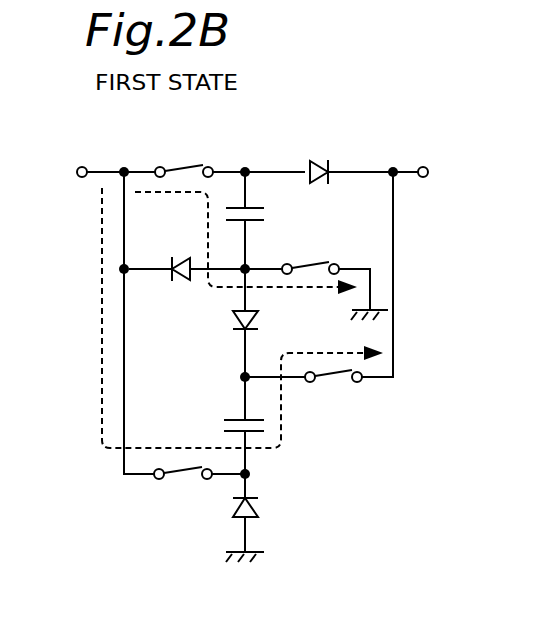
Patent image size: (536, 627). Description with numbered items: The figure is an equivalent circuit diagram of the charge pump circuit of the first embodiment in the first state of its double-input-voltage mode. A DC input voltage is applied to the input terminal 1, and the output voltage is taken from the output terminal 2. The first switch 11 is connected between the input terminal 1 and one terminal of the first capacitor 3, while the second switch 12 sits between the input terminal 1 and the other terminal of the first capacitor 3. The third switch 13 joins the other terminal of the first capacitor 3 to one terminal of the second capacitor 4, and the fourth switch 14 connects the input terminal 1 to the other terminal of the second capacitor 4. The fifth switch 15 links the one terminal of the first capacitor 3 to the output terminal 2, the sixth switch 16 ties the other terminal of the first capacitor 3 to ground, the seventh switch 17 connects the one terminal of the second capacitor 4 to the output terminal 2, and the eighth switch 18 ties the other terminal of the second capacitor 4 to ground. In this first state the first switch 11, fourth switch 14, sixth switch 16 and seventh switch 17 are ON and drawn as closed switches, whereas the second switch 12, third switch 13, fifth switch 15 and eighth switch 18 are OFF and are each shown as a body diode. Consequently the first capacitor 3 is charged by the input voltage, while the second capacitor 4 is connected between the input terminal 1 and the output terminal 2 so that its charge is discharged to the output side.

The input terminal 1 is at (84, 166).
The output terminal 2 is at (426, 166).
The first capacitor 3 is at (267, 213).
The second capacitor 4 is at (222, 425).
The first switch 11 is at (186, 168).
The second switch 12 is at (178, 278).
The third switch 13 is at (263, 318).
The fourth switch 14 is at (192, 478).
The fifth switch 15 is at (316, 166).
The sixth switch 16 is at (312, 264).
The seventh switch 17 is at (330, 380).
The eighth switch 18 is at (260, 508).